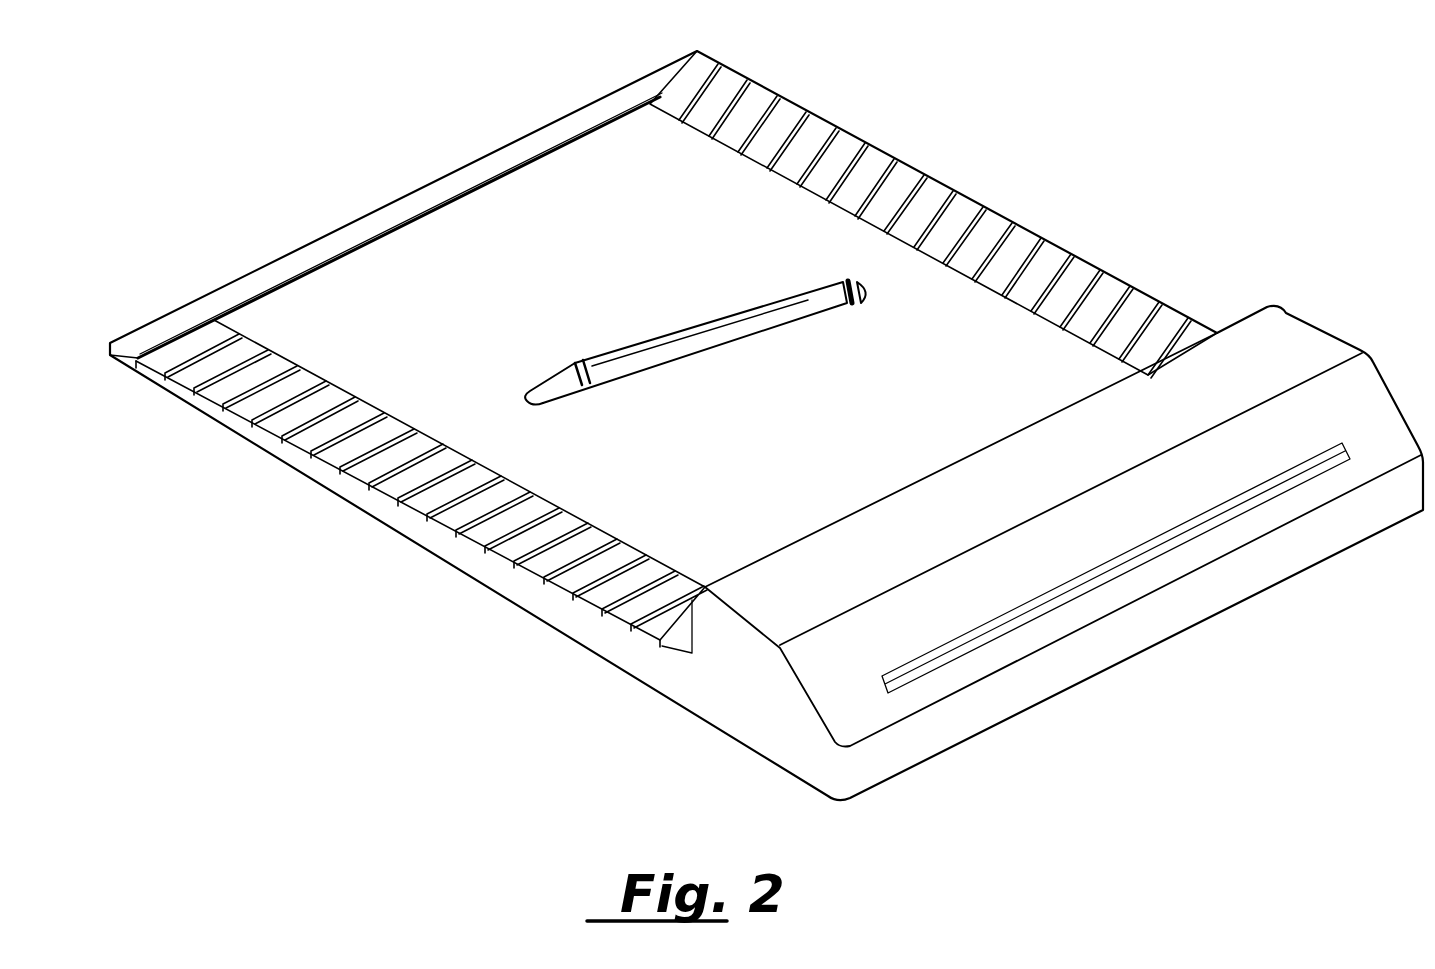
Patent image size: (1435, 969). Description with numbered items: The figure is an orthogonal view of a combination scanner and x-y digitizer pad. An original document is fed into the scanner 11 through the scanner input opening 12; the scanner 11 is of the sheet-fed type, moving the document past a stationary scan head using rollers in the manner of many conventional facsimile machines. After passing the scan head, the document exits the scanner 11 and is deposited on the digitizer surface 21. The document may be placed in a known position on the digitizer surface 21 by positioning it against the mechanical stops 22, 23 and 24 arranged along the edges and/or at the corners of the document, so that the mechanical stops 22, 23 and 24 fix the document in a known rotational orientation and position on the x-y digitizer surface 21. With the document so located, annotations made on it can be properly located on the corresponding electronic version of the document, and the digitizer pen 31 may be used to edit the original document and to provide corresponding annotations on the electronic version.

The scanner 11 is at (1252, 380).
The scanner input opening 12 is at (1130, 557).
The digitizer surface 21 is at (578, 240).
The mechanical stop 22 is at (348, 248).
The mechanical stop 23 is at (963, 272).
The mechanical stop 24 is at (497, 483).
The digitizer pen 31 is at (732, 330).